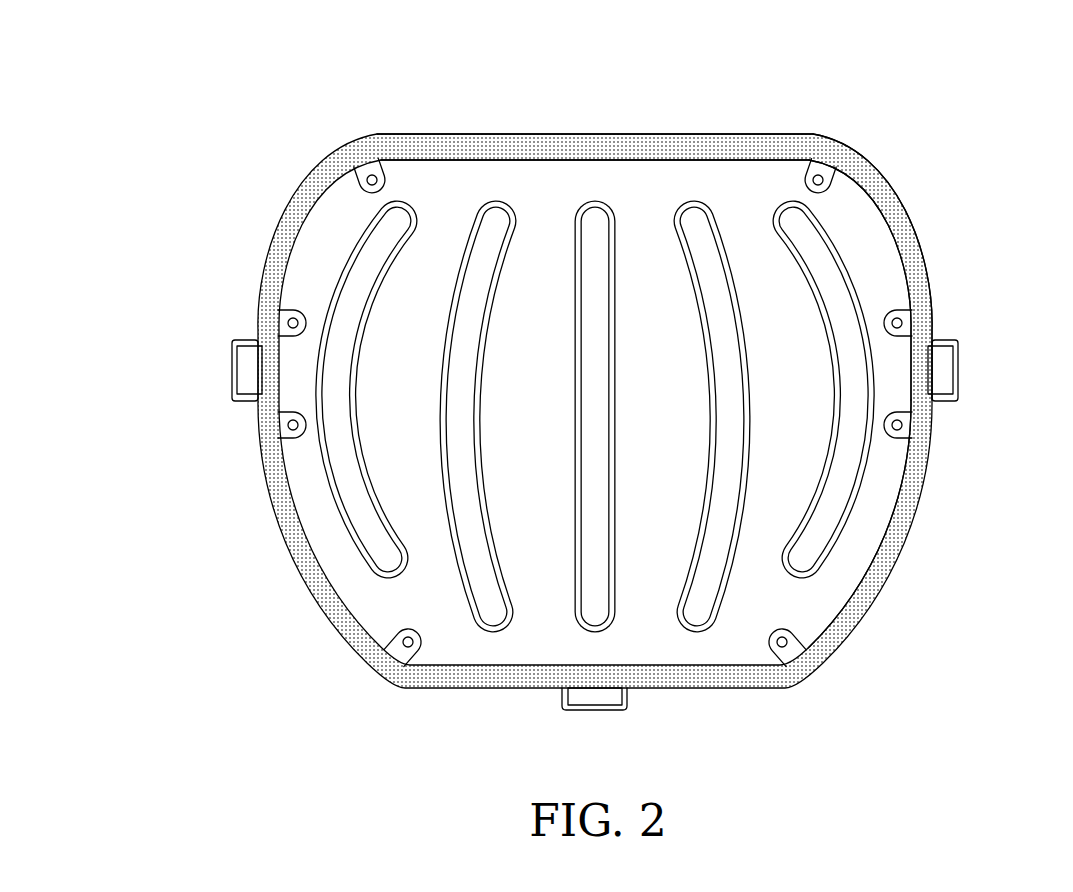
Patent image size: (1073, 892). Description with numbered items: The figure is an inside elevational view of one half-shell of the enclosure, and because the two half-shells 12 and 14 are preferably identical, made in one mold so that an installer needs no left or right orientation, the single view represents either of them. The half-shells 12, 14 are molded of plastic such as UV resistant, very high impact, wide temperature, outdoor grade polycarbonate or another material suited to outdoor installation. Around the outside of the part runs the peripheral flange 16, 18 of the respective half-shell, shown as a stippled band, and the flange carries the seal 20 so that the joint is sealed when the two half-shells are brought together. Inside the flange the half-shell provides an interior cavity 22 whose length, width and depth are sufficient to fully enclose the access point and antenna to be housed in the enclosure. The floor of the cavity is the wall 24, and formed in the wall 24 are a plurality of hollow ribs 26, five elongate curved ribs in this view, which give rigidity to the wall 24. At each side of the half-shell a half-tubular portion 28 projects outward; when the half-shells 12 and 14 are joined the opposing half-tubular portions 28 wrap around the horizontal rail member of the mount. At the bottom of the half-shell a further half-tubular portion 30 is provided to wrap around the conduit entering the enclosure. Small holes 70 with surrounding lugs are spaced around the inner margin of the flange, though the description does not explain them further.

The half-shell 12 is at (595, 371).
The half-shell 14 is at (719, 129).
The peripheral flange 16 is at (595, 113).
The peripheral flange 18 is at (566, 133).
The seal 20 is at (877, 193).
The interior cavity 22 is at (537, 634).
The wall 24 is at (846, 572).
The hollow rib 26 is at (340, 517).
The half-tubular portion 28 is at (233, 342).
The half-tubular portion 30 is at (628, 706).
The mounting hole 70 is at (372, 178).